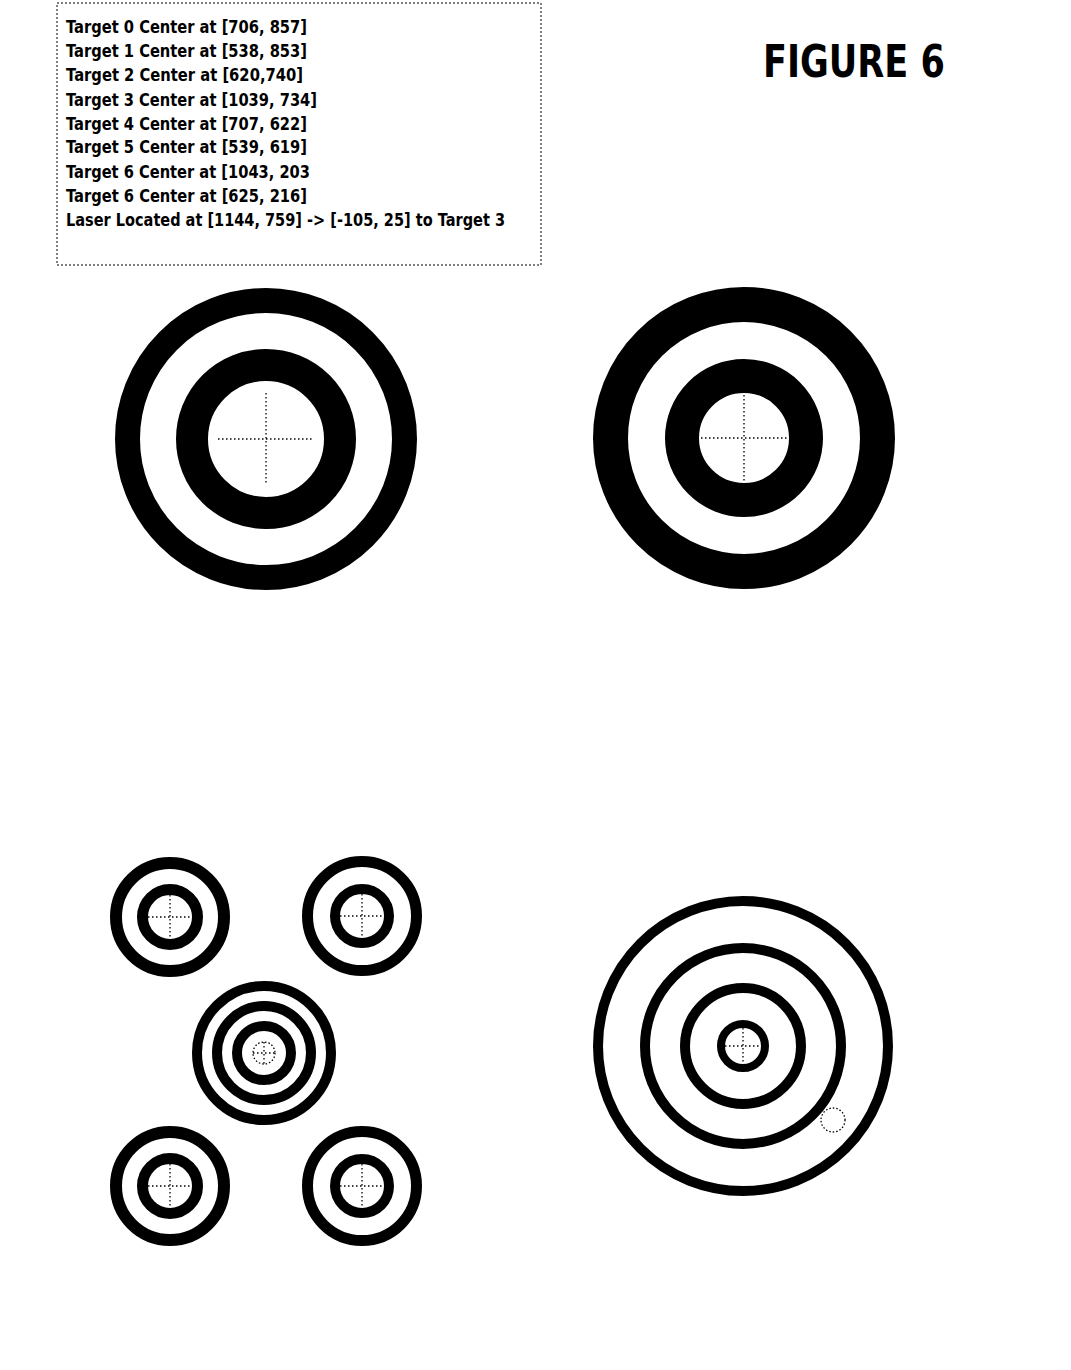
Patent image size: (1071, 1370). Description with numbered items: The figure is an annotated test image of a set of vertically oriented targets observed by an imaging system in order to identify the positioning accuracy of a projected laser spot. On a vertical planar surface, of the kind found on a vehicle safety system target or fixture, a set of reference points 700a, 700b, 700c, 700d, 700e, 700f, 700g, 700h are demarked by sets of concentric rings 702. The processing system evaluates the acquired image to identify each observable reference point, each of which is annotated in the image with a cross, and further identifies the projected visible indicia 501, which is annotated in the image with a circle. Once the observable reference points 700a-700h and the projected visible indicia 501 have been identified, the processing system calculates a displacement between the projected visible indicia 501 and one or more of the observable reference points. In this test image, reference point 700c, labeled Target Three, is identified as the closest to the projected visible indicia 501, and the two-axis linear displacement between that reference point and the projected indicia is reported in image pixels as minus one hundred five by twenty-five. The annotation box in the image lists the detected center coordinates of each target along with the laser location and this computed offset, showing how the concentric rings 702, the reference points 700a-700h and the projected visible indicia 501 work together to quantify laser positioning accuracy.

The reference point 700a is at (279, 451).
The reference point 700b is at (724, 423).
The reference point 700c is at (748, 1036).
The reference point 700d is at (371, 1181).
The reference point 700e is at (366, 911).
The reference point 700f is at (271, 1058).
The reference point 700g is at (166, 908).
The reference point 700h is at (167, 1177).
The concentric rings 702 is at (316, 589).
The projected visible indicia 501 is at (846, 1129).